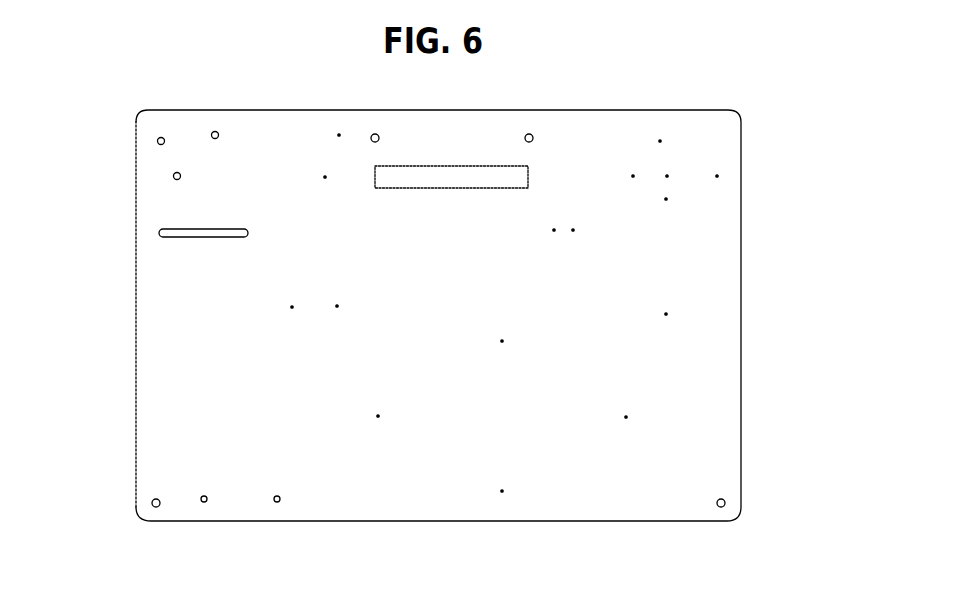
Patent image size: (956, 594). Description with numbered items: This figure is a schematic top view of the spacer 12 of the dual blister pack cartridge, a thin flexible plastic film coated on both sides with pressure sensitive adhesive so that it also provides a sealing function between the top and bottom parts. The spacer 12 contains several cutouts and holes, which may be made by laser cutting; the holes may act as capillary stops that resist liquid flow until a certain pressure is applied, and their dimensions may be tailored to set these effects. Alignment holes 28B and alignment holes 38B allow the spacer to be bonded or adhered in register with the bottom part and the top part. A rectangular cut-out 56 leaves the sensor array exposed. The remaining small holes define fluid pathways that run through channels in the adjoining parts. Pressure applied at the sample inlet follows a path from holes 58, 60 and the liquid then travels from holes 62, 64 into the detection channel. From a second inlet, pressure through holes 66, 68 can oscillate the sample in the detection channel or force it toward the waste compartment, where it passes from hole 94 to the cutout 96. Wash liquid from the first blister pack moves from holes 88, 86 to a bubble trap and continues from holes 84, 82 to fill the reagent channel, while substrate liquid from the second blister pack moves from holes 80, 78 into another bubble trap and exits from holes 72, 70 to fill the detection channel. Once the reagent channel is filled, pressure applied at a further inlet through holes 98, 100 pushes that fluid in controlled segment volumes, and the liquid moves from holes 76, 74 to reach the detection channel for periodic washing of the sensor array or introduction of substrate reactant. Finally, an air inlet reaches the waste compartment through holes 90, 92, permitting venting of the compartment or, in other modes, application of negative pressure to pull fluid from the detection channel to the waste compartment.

The spacer 12 is at (626, 497).
The alignment holes 28B is at (377, 125).
The alignment holes 38B is at (143, 506).
The cut-out 56 is at (441, 172).
The hole 58 is at (152, 128).
The hole 60 is at (210, 125).
The hole 62 is at (336, 122).
The hole 64 is at (325, 160).
The hole 66 is at (661, 127).
The hole 68 is at (725, 177).
The hole 70 is at (675, 168).
The hole 72 is at (671, 200).
The hole 74 is at (634, 163).
The hole 76 is at (587, 226).
The hole 78 is at (680, 307).
The hole 80 is at (641, 413).
The hole 82 is at (537, 236).
The hole 84 is at (490, 341).
The hole 86 is at (511, 495).
The hole 88 is at (360, 413).
The hole 90 is at (270, 503).
The hole 92 is at (196, 503).
The hole 94 is at (166, 177).
The cutout 96 is at (156, 223).
The hole 98 is at (283, 307).
The hole 100 is at (322, 307).